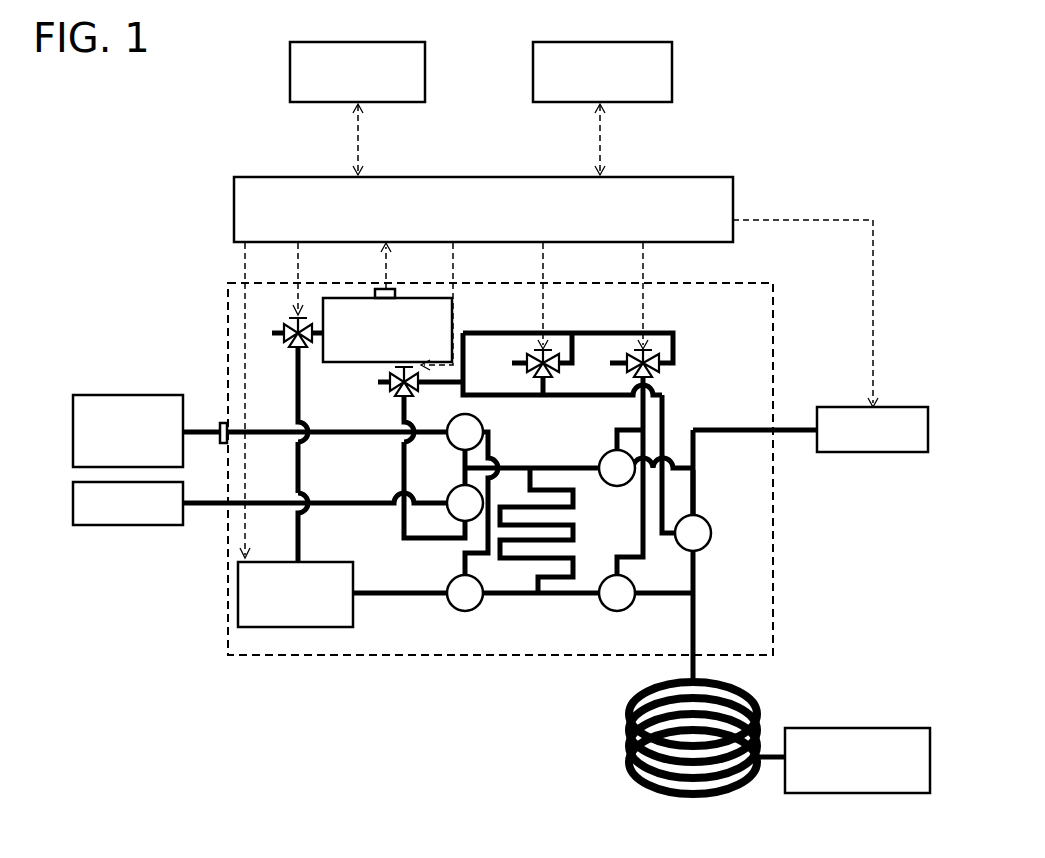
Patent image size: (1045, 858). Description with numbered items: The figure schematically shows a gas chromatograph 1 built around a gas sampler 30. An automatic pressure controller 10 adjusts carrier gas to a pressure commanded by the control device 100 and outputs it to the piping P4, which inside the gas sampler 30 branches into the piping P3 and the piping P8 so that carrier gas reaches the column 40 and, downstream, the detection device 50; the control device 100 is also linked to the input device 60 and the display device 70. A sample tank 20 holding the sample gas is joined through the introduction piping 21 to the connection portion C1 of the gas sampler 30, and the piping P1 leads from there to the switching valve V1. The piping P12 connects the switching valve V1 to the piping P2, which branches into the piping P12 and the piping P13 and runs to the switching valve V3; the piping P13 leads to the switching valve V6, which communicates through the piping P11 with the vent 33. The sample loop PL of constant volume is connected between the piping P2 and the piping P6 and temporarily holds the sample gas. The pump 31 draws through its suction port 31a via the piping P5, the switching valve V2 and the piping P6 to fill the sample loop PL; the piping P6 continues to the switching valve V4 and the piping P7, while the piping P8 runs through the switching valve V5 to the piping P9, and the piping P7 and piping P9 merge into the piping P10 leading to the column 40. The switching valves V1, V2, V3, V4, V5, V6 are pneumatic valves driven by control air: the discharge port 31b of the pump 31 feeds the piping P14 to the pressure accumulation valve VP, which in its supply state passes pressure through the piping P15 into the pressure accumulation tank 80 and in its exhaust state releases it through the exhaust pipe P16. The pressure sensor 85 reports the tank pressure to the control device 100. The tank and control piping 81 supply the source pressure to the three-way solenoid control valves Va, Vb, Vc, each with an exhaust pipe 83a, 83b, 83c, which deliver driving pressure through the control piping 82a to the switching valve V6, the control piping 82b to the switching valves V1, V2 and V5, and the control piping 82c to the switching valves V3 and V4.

The gas chromatograph 1 is at (485, 28).
The automatic pressure controller 10 is at (888, 407).
The sample tank 20 is at (127, 395).
The introduction piping 21 is at (204, 430).
The connection portion C1 is at (224, 446).
The gas sampler 30 is at (728, 283).
The pump 31 is at (306, 562).
The suction port 31a is at (360, 594).
The discharge port 31b is at (306, 548).
The vent 33 is at (125, 530).
The column 40 is at (737, 692).
The detection device 50 is at (857, 728).
The input device 60 is at (330, 42).
The display device 70 is at (623, 42).
The pressure accumulation tank 80 is at (387, 330).
The control piping 81 is at (661, 333).
The control piping 82a is at (398, 442).
The control piping 82b is at (536, 397).
The control piping 82c is at (648, 407).
The exhaust pipe 83a is at (401, 413).
The exhaust pipe 83b is at (533, 371).
The exhaust pipe 83c is at (631, 371).
The pressure sensor 85 is at (393, 290).
The control device 100 is at (660, 177).
The pressure accumulation valve VP is at (289, 345).
The control valve Va is at (394, 380).
The control valve Vb is at (529, 360).
The control valve Vc is at (629, 360).
The switching valve V1 is at (451, 421).
The switching valve V2 is at (473, 612).
The switching valve V3 is at (603, 458).
The switching valve V4 is at (633, 576).
The switching valve V5 is at (713, 532).
The switching valve V6 is at (455, 528).
The piping P1 is at (308, 430).
The piping P2 is at (541, 466).
The piping P3 is at (678, 462).
The piping P4 is at (795, 428).
The piping P5 is at (405, 599).
The piping P6 is at (565, 599).
The piping P7 is at (662, 600).
The piping P8 is at (697, 493).
The piping P9 is at (697, 577).
The piping P10 is at (697, 636).
The piping P11 is at (312, 502).
The piping P12 is at (462, 462).
The piping P13 is at (462, 490).
The piping P14 is at (294, 488).
The piping P15 is at (308, 300).
The exhaust pipe P16 is at (264, 400).
The sample loop PL is at (575, 531).